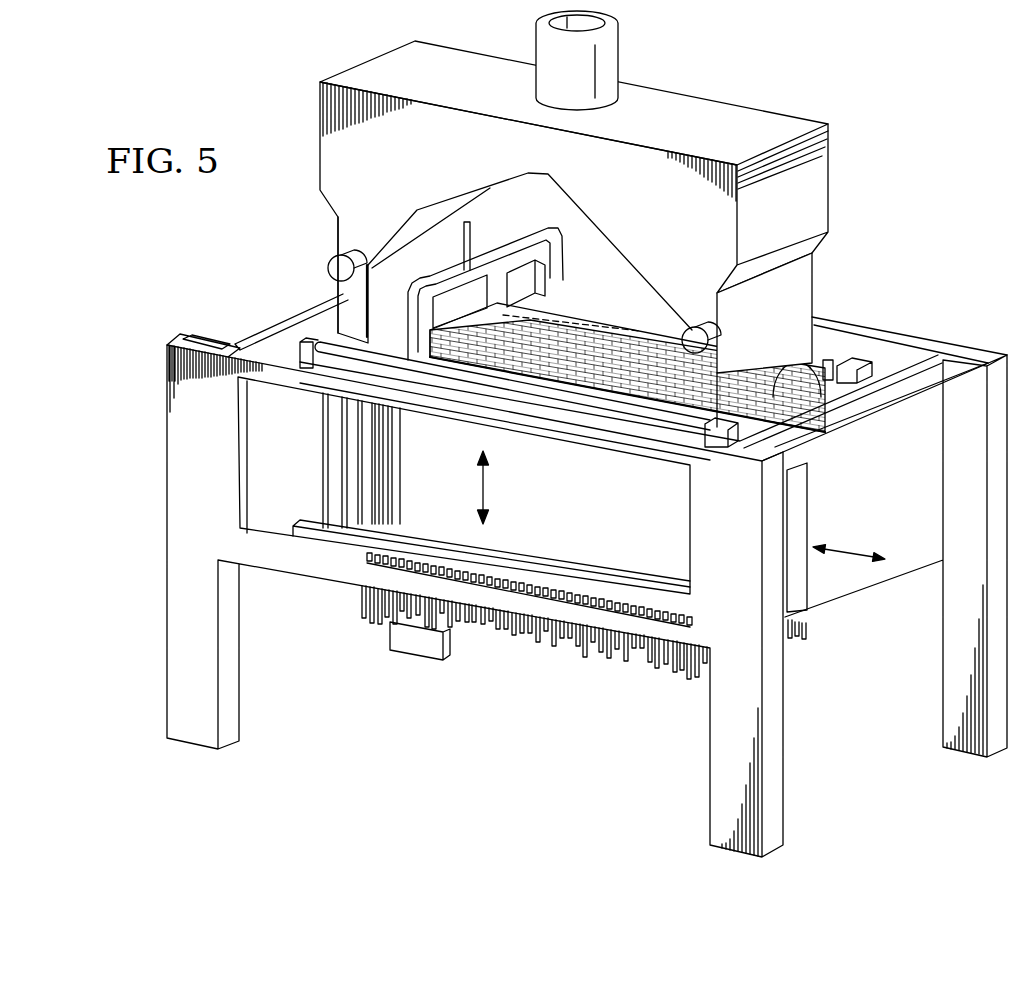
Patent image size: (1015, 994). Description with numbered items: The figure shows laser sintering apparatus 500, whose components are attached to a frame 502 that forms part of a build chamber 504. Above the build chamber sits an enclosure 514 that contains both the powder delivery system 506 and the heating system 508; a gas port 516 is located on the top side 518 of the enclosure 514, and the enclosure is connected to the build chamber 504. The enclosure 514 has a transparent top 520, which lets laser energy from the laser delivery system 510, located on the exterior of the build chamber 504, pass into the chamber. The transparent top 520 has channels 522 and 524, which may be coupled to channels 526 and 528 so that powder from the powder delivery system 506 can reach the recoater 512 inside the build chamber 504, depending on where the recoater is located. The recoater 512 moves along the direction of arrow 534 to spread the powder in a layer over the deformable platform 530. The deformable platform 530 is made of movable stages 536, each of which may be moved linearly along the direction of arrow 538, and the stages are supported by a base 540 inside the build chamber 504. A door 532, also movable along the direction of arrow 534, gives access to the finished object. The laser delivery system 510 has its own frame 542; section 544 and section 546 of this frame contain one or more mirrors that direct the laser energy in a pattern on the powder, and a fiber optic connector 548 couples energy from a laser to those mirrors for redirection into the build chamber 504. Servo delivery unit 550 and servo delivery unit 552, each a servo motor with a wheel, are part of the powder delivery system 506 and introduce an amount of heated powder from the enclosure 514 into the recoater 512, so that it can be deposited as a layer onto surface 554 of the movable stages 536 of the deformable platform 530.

The laser sintering apparatus 500 is at (834, 93).
The frame 502 is at (551, 573).
The build chamber 504 is at (284, 431).
The powder delivery system 506 is at (800, 277).
The heating system 508 is at (552, 169).
The laser delivery system 510 is at (570, 316).
The recoater 512 is at (352, 322).
The enclosure 514 is at (360, 73).
The top side 518 is at (356, 66).
The gas port 516 is at (620, 58).
The transparent top 520 is at (823, 360).
The channel 522 is at (770, 430).
The channel 524 is at (283, 322).
The channel 526 is at (830, 405).
The channel 528 is at (467, 305).
The deformable platform 530 is at (627, 328).
The door 532 is at (794, 487).
The arrow 534 is at (847, 547).
The movable stages 536 is at (632, 408).
The arrow 538 is at (486, 491).
The base 540 is at (373, 530).
The frame 542 is at (582, 224).
The section 544 is at (392, 270).
The section 546 is at (520, 283).
The fiber optic connector 548 is at (423, 280).
The servo delivery unit 550 is at (330, 266).
The servo delivery unit 552 is at (693, 327).
The surface 554 is at (623, 348).